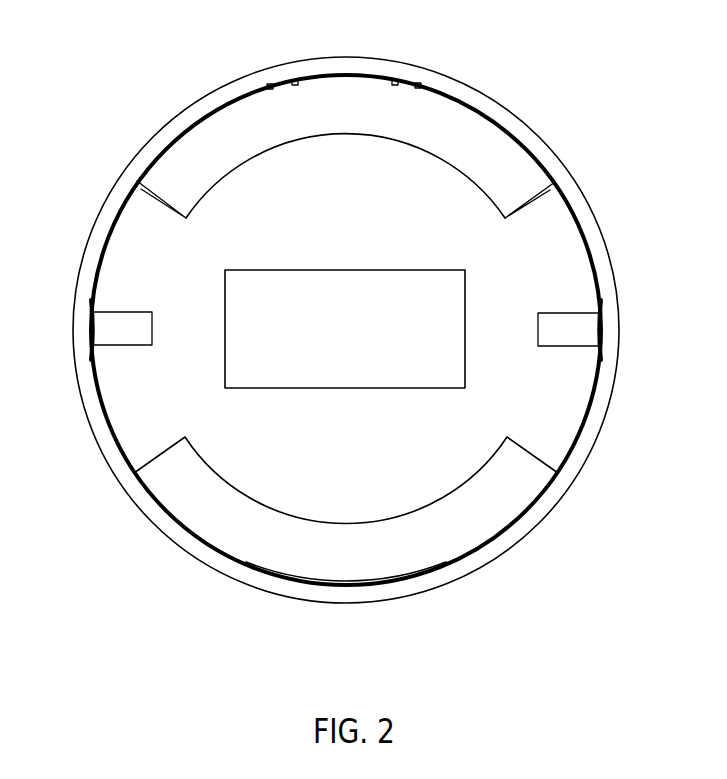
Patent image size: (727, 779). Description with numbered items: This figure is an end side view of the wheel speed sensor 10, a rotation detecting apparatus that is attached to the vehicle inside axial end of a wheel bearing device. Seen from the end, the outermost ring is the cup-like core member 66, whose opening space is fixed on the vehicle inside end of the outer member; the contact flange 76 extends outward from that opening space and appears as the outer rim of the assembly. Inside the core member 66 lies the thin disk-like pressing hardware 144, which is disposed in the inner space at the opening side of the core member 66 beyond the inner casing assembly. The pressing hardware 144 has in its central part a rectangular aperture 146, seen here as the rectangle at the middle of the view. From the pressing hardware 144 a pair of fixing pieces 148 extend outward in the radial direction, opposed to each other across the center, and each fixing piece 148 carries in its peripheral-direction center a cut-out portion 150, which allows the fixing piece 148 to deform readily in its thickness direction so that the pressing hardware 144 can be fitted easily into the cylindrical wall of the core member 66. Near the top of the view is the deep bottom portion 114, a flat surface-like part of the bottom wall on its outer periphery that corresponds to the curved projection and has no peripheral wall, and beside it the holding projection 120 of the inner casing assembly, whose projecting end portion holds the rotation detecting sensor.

The wheel speed sensor 10 is at (337, 330).
The core member 66 is at (130, 156).
The contact flange 76 is at (330, 593).
The deep bottom portion 114 is at (346, 98).
The holding projection 120 is at (142, 193).
The pressing hardware 144 is at (242, 494).
The rectangular aperture 146 is at (466, 374).
The fixing piece 148 is at (122, 283).
The cut-out portion 150 is at (118, 345).